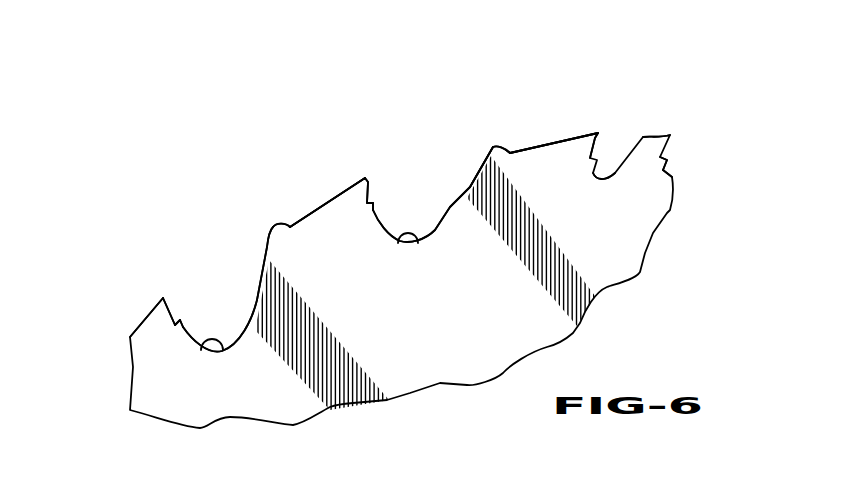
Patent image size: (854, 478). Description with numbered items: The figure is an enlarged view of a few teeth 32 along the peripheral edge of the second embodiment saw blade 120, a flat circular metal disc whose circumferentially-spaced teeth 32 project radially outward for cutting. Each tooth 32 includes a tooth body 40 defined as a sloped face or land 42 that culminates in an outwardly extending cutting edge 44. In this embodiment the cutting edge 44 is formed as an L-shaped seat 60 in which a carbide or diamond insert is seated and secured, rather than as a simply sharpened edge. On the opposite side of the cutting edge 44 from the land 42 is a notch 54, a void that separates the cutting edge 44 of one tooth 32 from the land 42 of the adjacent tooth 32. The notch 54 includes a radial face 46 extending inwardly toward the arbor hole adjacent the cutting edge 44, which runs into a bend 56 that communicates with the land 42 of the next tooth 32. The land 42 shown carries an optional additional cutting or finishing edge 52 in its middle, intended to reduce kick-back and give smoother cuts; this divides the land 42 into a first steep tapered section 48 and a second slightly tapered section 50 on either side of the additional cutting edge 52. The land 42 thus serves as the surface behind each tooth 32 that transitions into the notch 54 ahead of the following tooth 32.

The saw blade 120 is at (261, 101).
The tooth 32 is at (108, 325).
The tooth body 40 is at (298, 199).
The land 42 is at (555, 132).
The cutting edge 44 is at (163, 297).
The radial face 46 is at (183, 327).
The first steep tapered section 48 is at (258, 277).
The second slightly tapered section 50 is at (327, 200).
The additional cutting edge 52 is at (273, 224).
The notch 54 is at (233, 347).
The bend 56 is at (223, 350).
The L-shaped seat 60 is at (177, 322).